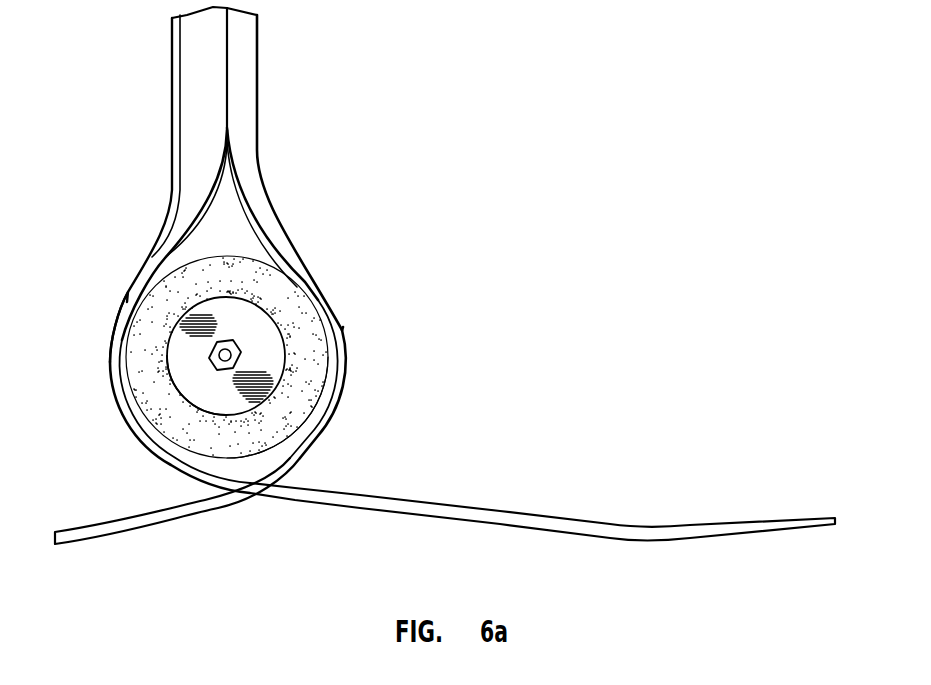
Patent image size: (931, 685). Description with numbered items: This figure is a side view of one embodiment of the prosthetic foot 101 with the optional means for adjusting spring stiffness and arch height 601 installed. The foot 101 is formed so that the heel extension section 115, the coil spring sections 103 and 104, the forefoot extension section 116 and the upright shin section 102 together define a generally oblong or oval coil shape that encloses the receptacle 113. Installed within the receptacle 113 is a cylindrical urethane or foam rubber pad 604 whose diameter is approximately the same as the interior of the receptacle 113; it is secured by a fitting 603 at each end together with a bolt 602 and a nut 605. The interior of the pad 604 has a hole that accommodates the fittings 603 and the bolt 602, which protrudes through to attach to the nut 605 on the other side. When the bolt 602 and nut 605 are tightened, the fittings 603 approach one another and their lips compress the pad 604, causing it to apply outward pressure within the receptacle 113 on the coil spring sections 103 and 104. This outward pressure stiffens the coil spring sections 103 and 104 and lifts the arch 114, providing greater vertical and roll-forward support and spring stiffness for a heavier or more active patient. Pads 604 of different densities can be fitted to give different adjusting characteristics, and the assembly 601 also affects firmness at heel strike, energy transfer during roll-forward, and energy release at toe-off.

The strap loop 101 is at (303, 268).
The shin section 102 is at (258, 50).
The coil spring section 103 is at (343, 327).
The coil spring section 104 is at (127, 302).
The receptacle 113 is at (218, 243).
The arch 114 is at (252, 517).
The heel extension section 115 is at (93, 547).
The forefoot extension section 116 is at (538, 513).
The means for adjusting spring stiffness and arch height 601 is at (142, 358).
The bolt 602 is at (242, 357).
The fitting 603 is at (272, 373).
The cylindrical urethane or foam rubber pad 604 is at (273, 423).
The nut 605 is at (217, 363).